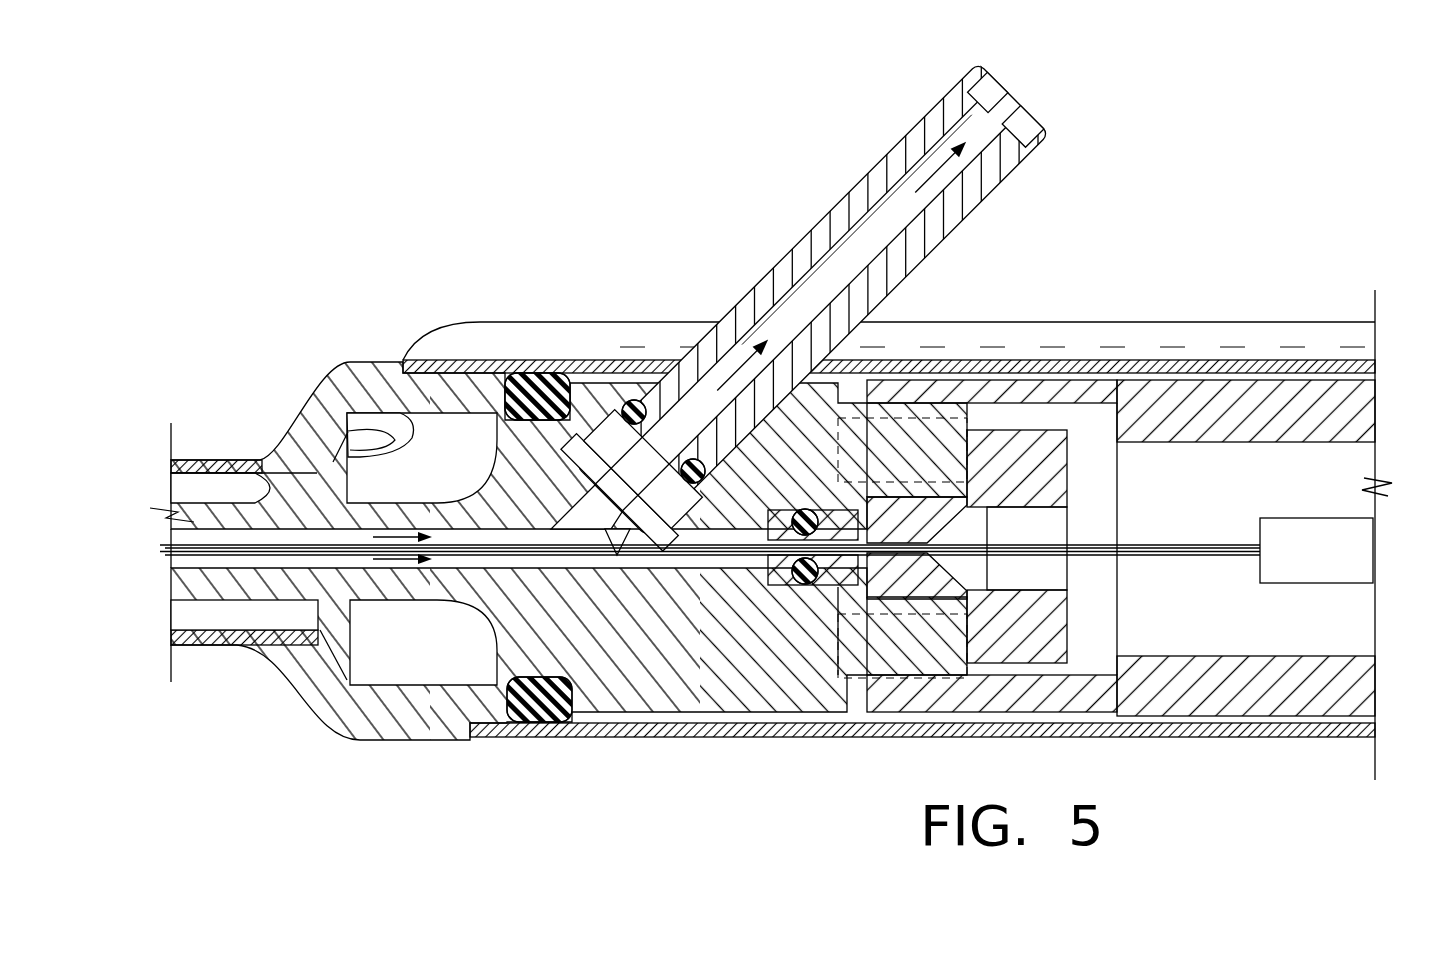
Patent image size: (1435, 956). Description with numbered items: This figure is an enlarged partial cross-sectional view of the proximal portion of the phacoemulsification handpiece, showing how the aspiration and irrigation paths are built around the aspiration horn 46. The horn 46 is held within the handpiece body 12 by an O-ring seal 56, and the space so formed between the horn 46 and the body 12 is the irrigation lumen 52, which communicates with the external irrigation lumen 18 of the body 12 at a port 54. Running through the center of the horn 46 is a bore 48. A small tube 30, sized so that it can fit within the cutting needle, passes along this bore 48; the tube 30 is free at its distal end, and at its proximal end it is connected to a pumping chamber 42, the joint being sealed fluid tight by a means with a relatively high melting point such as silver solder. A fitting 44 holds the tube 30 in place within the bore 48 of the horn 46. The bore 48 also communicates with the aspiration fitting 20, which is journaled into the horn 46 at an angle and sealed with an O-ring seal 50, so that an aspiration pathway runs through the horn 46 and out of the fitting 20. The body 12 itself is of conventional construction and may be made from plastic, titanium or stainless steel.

The handpiece body 12 is at (1385, 371).
The external irrigation lumen 18 is at (1099, 314).
The aspiration fitting 20 is at (810, 218).
The tube 30 is at (172, 560).
The pumping chamber 42 is at (1308, 515).
The fitting 44 is at (1067, 598).
The aspiration horn 46 is at (460, 620).
The bore 48 is at (188, 520).
The O-ring seal 50 is at (652, 398).
The irrigation lumen 52 is at (208, 490).
The port 54 is at (362, 458).
The O-ring seal 56 is at (537, 697).